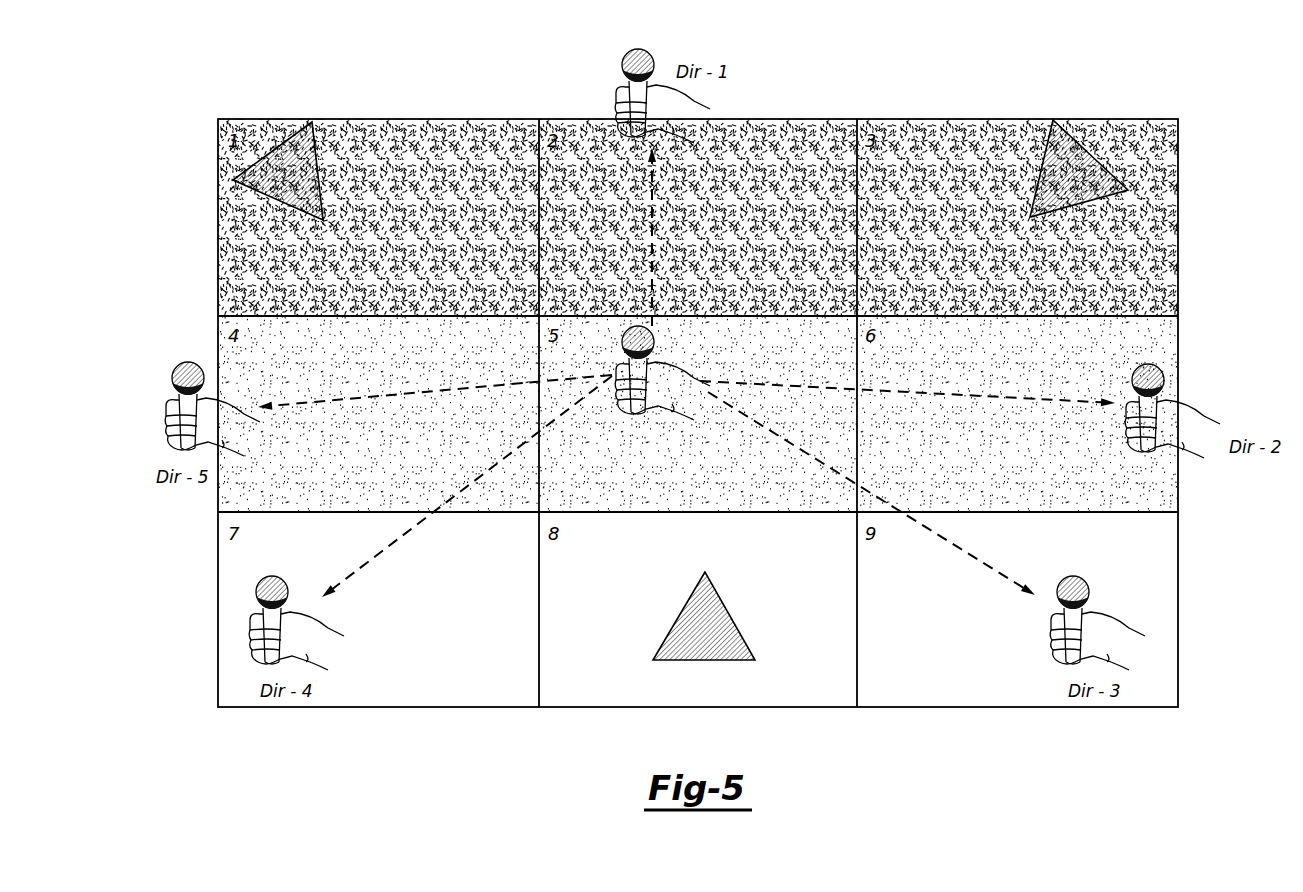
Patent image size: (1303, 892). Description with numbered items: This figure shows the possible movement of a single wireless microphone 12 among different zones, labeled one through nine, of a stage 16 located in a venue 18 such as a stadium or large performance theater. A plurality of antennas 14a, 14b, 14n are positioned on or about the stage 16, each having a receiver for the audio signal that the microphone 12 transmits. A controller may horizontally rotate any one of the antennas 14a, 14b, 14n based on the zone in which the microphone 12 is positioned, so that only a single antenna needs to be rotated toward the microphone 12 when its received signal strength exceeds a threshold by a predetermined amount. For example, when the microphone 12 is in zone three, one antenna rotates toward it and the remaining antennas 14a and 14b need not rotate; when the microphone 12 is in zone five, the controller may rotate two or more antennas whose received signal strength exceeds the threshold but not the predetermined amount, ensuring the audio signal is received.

The wireless microphone 12 is at (675, 405).
The antenna 14a is at (273, 147).
The antenna 14b is at (732, 610).
The antenna 14n is at (1093, 148).
The stage 16 is at (898, 693).
The venue 18 is at (904, 79).